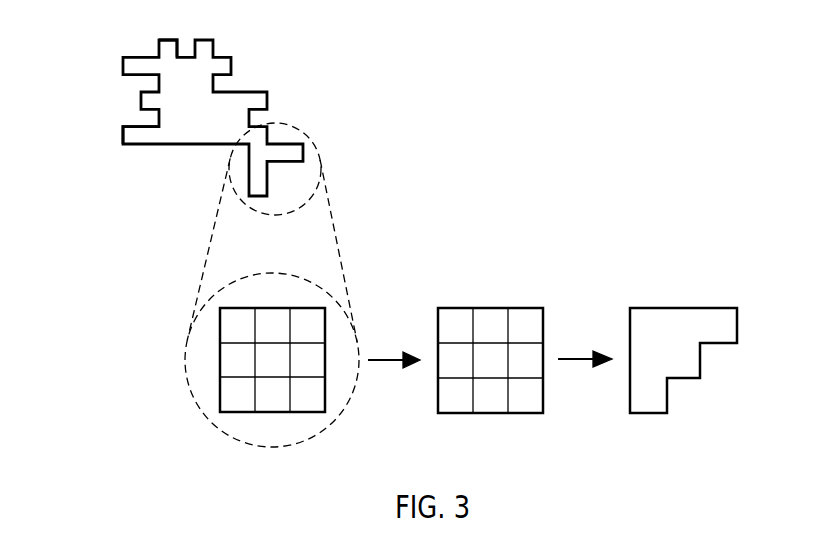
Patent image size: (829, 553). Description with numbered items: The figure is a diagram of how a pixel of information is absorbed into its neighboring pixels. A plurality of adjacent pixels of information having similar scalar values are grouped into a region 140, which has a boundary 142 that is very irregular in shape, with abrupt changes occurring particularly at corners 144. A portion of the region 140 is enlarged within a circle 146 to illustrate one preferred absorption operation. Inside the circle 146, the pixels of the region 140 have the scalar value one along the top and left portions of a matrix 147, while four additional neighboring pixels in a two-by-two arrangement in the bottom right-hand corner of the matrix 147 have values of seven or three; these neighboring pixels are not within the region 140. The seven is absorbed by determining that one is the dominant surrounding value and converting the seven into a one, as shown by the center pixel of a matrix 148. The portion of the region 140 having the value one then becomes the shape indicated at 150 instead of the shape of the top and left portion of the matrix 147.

The region 140 is at (212, 113).
The boundary 142 is at (164, 40).
The corners 144 is at (125, 126).
The circle 146 is at (273, 447).
The matrix 147 is at (307, 308).
The matrix 148 is at (510, 308).
The shape 150 is at (678, 308).